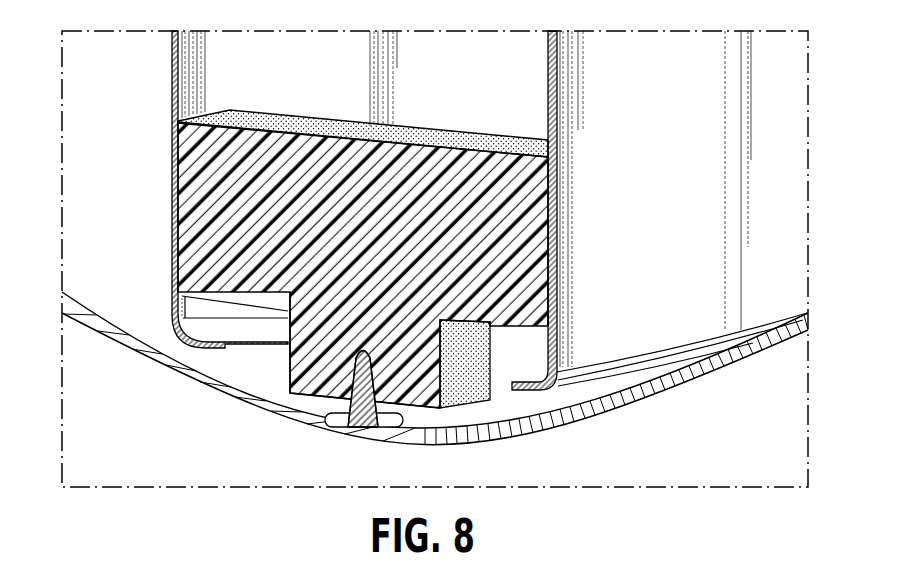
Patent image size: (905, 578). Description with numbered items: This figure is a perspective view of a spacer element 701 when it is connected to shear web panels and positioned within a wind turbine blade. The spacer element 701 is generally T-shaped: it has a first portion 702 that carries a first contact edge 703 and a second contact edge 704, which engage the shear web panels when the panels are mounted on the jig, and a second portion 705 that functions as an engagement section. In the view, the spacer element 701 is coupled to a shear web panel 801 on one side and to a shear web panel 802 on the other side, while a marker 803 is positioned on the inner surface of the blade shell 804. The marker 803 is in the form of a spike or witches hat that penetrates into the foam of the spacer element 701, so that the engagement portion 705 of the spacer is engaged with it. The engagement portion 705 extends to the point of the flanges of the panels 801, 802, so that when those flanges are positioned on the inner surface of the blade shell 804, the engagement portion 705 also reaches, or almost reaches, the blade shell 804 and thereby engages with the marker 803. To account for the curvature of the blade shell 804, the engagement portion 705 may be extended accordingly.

The spacer element 701 is at (445, 117).
The first portion 702 is at (317, 197).
The first contact edge 703 is at (176, 210).
The second contact edge 704 is at (557, 237).
The second portion 705 is at (313, 345).
The shear web panel 801 is at (557, 298).
The shear web panel 802 is at (172, 178).
The marker 803 is at (361, 408).
The blade shell 804 is at (141, 367).